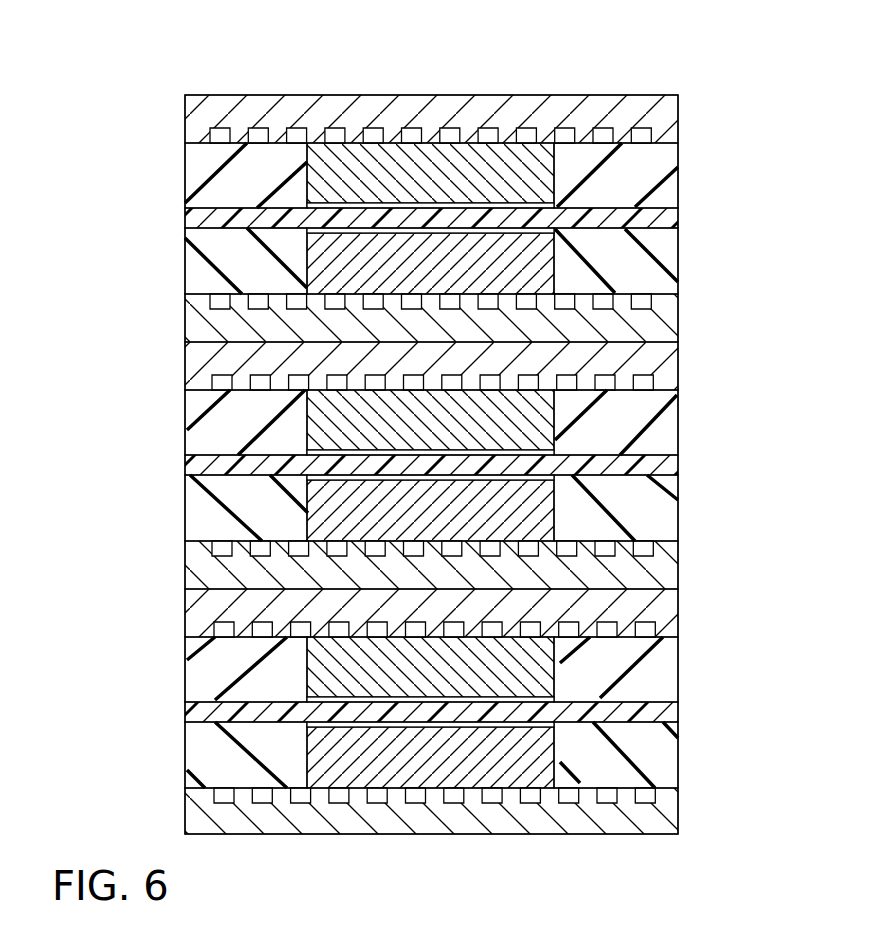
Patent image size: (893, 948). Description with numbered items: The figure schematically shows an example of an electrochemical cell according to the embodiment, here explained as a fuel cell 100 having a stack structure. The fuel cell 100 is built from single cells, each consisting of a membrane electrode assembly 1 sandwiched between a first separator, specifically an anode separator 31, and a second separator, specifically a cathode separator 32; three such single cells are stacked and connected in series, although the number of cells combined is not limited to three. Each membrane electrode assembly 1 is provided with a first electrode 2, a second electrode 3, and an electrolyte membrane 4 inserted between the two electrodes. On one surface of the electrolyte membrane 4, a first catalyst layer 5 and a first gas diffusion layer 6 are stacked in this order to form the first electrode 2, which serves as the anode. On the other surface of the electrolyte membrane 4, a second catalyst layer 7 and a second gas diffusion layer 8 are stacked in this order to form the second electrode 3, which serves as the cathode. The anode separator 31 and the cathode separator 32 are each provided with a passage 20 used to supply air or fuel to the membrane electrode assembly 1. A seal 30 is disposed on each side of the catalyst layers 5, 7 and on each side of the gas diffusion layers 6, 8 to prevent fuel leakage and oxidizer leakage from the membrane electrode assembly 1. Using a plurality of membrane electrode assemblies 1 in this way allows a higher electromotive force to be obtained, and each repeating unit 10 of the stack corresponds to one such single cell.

The fuel cell 100 is at (639, 82).
The unit laminate 10 is at (737, 93).
The membrane electrode assembly 1 is at (686, 143).
The first electrode 2 is at (490, 58).
The second electrode 3 is at (493, 872).
The electrolyte membrane 4 is at (190, 213).
The first catalyst layer 5 is at (466, 203).
The first gas diffusion layer 6 is at (396, 170).
The second catalyst layer 7 is at (484, 722).
The second gas diffusion layer 8 is at (405, 762).
The passage 20 is at (259, 130).
The seal 30 is at (190, 172).
The first separator 31 is at (679, 106).
The second separator 32 is at (673, 326).